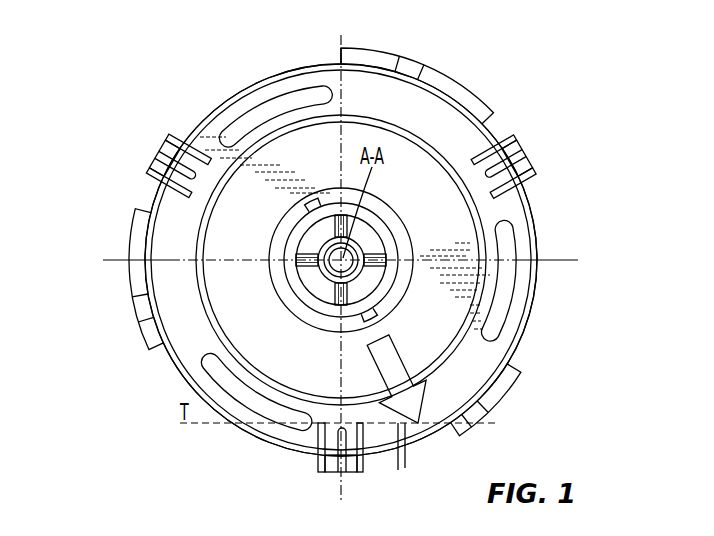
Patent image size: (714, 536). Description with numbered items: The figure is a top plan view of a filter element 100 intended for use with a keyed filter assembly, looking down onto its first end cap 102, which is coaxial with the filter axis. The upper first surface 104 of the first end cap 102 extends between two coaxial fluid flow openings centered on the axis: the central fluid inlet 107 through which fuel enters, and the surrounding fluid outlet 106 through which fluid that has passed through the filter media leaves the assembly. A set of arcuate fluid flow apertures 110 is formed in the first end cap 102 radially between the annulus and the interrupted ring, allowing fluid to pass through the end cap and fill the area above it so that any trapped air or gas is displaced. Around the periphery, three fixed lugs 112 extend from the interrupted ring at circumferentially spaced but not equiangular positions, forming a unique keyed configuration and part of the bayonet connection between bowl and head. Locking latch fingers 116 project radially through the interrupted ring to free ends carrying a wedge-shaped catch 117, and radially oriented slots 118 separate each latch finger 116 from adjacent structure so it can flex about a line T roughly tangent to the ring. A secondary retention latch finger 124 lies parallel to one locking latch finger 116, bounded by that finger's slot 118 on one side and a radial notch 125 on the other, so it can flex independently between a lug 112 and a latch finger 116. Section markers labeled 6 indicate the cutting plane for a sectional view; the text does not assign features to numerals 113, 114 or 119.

The filter element 100 is at (176, 72).
The first end cap 102 is at (252, 85).
The first surface 104 is at (465, 270).
The fluid outlet 106 is at (362, 287).
The fluid inlet 107 is at (347, 267).
The fluid flow apertures 110 is at (302, 92).
The lugs 112 is at (447, 60).
The tab 113 is at (150, 345).
The segment end 114 is at (363, 49).
The locking latch fingers 116 is at (163, 157).
The catch 117 is at (165, 183).
The slots 118 is at (175, 160).
The surface 119 is at (462, 170).
The secondary retention latch finger 124 is at (391, 463).
The notch 125 is at (406, 420).
The section line 6 is at (103, 260).